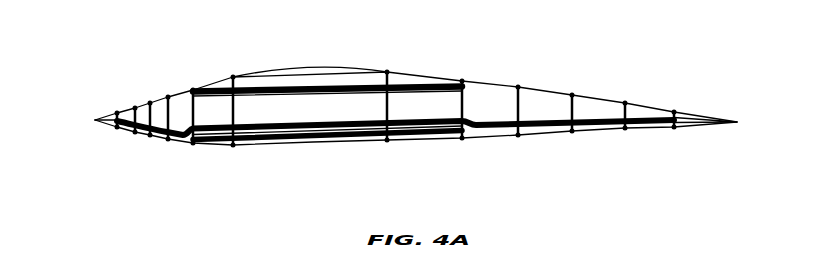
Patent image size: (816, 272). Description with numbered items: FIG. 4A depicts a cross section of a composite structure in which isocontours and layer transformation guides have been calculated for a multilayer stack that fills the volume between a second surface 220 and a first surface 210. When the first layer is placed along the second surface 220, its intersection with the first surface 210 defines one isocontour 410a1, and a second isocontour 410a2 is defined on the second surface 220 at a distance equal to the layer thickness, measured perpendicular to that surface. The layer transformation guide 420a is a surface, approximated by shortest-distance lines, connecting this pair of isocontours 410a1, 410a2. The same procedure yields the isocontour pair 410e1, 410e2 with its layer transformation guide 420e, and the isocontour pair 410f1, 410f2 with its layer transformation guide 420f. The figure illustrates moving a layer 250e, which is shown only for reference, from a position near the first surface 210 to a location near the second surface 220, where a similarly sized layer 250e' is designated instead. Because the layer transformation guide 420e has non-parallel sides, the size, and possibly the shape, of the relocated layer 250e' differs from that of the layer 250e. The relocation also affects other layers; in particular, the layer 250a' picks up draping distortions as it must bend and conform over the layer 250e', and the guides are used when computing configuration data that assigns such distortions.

The first surface 210 is at (542, 93).
The second surface 220 is at (542, 133).
The layer transformation guide 420a is at (113, 115).
The isocontour 410a1 is at (117, 112).
The isocontour 410a2 is at (115, 128).
The layer transformation guide 420e is at (193, 103).
The isocontour 410e1 is at (193, 90).
The isocontour 410e2 is at (192, 145).
The layer transformation guide 420f is at (387, 108).
The isocontour 410f1 is at (387, 72).
The isocontour 410f2 is at (387, 140).
The layer 250e is at (327, 61).
The layer 250e' is at (327, 164).
The layer 250a' is at (395, 106).